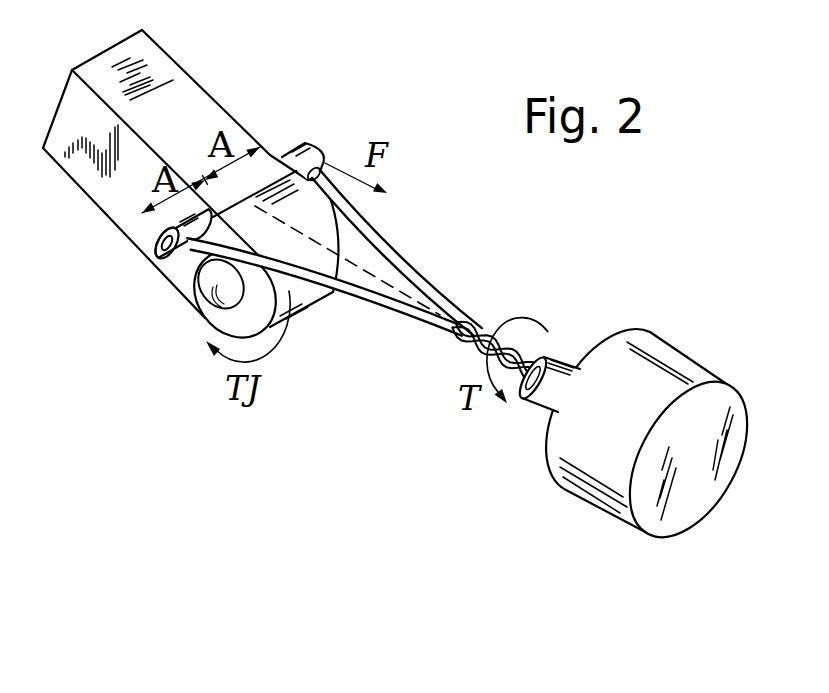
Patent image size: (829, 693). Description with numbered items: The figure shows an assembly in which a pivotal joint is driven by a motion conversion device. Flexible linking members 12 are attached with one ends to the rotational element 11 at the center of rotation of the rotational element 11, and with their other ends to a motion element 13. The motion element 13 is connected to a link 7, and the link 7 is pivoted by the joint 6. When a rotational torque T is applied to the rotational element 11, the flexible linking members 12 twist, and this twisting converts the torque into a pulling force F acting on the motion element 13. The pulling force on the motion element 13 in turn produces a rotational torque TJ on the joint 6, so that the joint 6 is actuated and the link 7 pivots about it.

The link 7 is at (125, 203).
The motion element 13 is at (163, 266).
The joint 6 is at (220, 290).
The flexible linking members 12 is at (378, 302).
The rotational element 11 is at (567, 440).